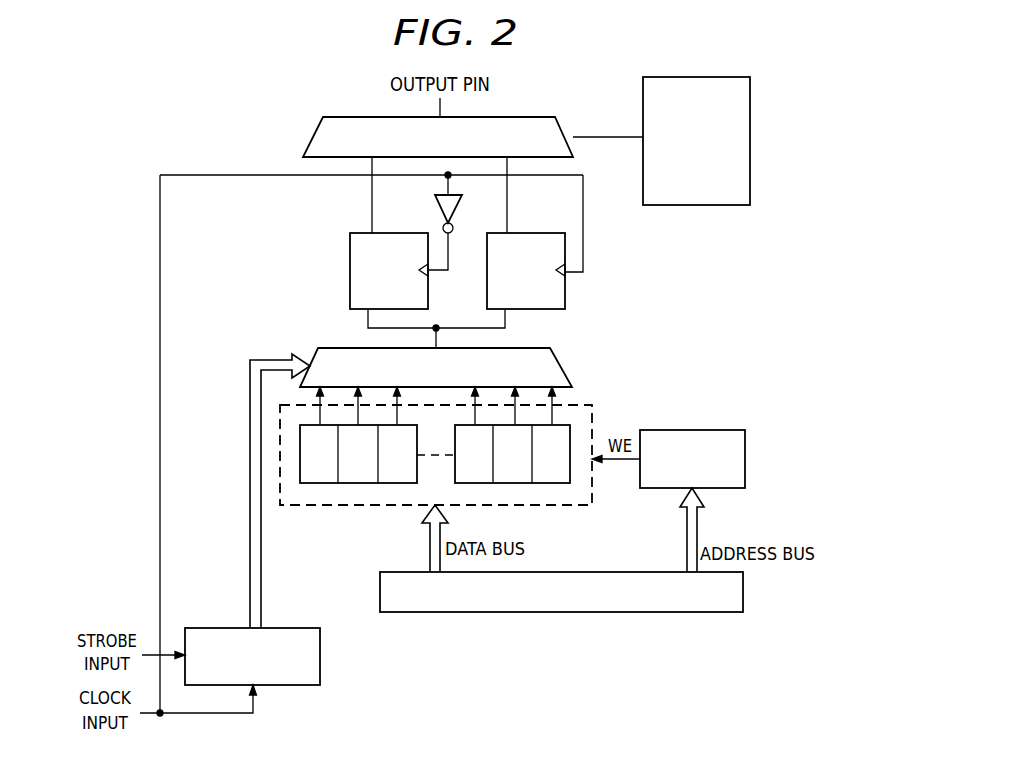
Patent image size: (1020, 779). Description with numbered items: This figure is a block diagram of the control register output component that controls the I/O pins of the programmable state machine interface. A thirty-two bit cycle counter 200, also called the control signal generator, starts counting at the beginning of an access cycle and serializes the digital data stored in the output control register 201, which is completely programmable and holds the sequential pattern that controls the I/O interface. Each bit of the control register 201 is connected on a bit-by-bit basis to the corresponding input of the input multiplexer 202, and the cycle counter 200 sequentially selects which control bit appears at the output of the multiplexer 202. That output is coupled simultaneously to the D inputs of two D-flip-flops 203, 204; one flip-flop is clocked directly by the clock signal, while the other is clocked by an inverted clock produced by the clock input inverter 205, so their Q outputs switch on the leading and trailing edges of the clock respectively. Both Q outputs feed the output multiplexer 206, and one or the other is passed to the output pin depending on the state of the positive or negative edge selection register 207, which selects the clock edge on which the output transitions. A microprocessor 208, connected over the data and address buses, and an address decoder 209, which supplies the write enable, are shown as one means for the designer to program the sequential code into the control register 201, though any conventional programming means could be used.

The cycle counter 200 is at (320, 650).
The output control register 201 is at (334, 505).
The input multiplexer 202 is at (562, 369).
The D-flip-flop 203 is at (350, 272).
The D-flip-flop 204 is at (565, 297).
The clock input inverter 205 is at (437, 207).
The output multiplexer 206 is at (312, 134).
The positive or negative edge selection register 207 is at (750, 140).
The microprocessor 208 is at (743, 598).
The address decoder 209 is at (693, 430).